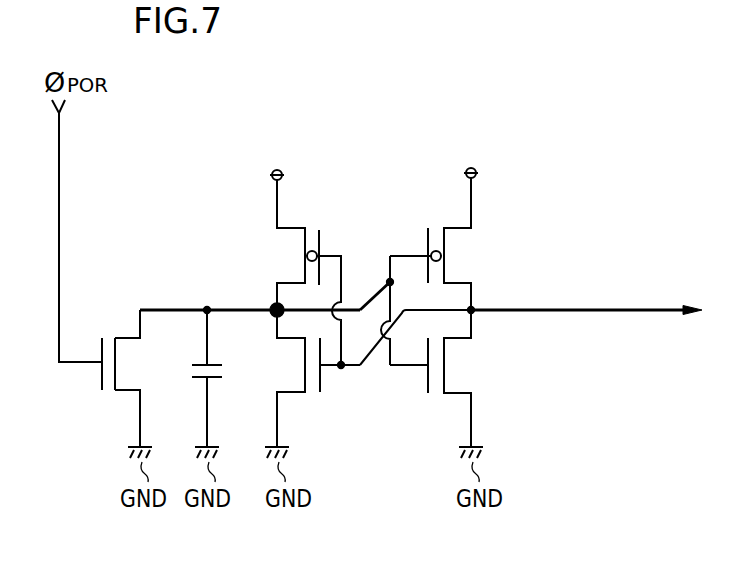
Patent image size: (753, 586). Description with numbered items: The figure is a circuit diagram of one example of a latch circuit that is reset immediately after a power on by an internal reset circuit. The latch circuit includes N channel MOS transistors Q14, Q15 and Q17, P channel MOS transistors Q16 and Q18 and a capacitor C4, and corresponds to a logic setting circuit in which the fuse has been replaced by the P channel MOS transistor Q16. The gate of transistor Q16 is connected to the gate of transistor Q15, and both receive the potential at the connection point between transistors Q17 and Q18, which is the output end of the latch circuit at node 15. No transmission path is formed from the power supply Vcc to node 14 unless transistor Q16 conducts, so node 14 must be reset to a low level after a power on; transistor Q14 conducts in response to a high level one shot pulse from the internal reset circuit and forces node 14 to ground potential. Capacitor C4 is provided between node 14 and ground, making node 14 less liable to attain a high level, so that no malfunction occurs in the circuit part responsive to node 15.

The node 14 is at (206, 305).
The node 15 is at (474, 308).
The N channel MOS transistor Q14 is at (122, 369).
The N channel MOS transistor Q15 is at (302, 368).
The P channel MOS transistor Q16 is at (293, 257).
The N channel MOS transistor Q17 is at (450, 368).
The P channel MOS transistor Q18 is at (455, 257).
The capacitor C4 is at (223, 377).